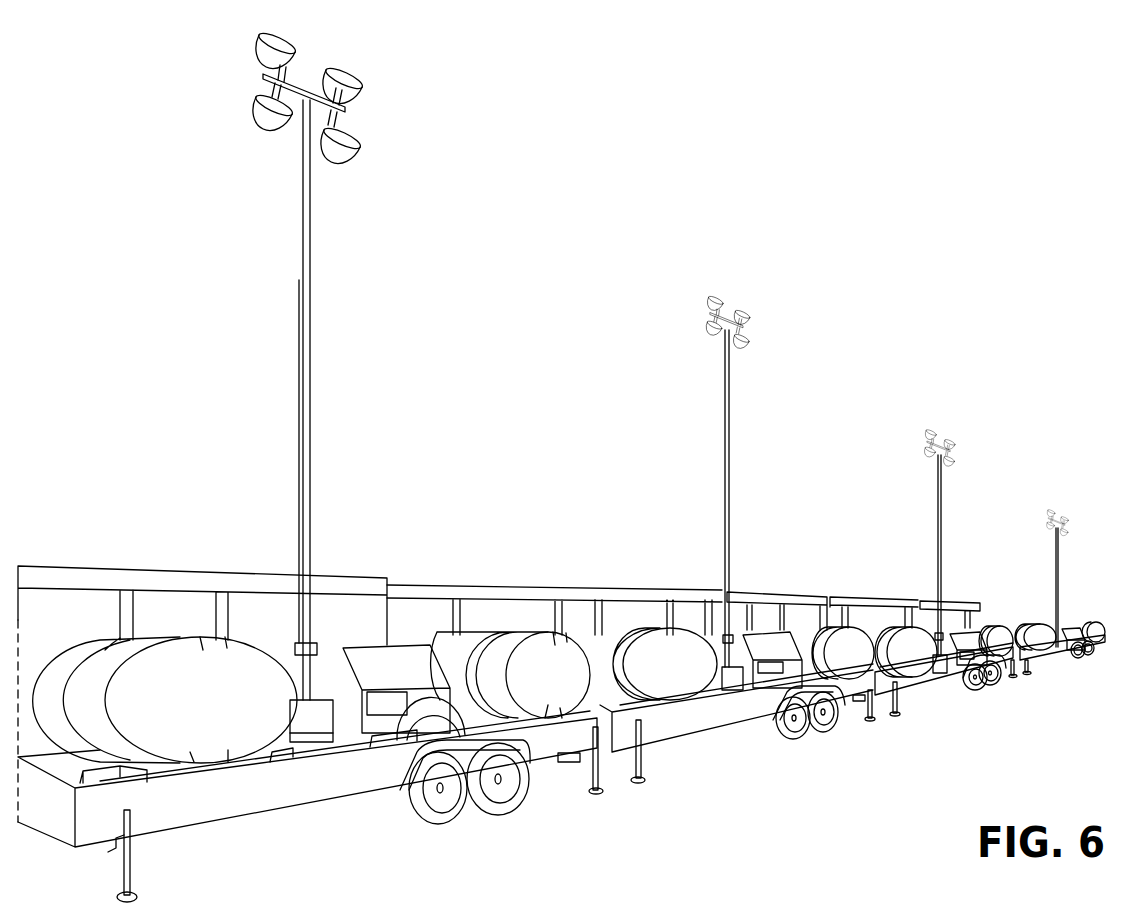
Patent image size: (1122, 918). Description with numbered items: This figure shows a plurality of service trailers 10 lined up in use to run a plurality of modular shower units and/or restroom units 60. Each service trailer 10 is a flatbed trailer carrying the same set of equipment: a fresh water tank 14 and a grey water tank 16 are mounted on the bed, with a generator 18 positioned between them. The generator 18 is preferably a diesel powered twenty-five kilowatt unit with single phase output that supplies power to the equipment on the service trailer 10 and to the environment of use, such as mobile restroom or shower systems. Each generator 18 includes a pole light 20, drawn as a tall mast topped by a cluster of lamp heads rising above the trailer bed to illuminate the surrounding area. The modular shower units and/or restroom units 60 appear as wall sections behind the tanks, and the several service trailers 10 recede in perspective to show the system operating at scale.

The service trailer 10 is at (270, 790).
The fresh water tank 14 is at (561, 685).
The grey water tank 16 is at (171, 708).
The generator 18 is at (411, 675).
The light 20 is at (327, 291).
The modular shower units and/or restroom units 60 is at (166, 578).